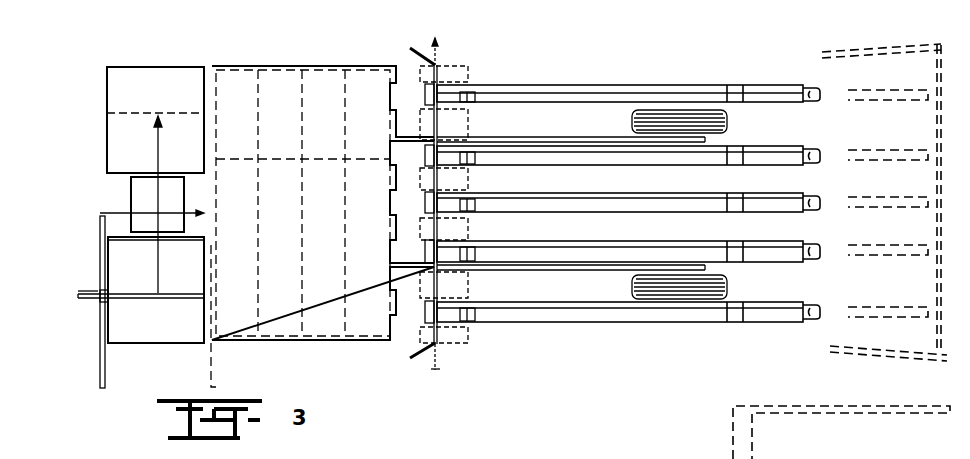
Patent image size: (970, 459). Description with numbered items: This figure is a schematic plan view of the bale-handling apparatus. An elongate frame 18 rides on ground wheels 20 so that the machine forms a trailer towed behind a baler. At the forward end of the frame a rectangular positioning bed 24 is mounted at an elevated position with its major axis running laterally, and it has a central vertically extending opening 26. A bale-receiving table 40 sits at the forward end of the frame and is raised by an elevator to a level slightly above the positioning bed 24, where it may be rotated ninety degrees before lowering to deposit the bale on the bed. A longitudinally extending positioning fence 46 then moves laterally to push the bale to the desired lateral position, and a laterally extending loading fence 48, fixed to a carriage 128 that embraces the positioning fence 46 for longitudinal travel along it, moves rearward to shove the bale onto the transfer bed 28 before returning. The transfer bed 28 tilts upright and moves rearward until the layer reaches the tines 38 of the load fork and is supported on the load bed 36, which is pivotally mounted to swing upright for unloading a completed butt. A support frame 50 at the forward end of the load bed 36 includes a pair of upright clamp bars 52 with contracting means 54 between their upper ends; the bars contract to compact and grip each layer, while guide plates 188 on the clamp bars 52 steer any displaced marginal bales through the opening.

The elongate frame 18 is at (526, 140).
The ground wheels 20 is at (632, 122).
The positioning bed 24 is at (150, 344).
The central vertically extending opening 26 is at (114, 175).
The transfer bed 28 is at (290, 204).
The load bed 36 is at (597, 86).
The tines 38 is at (475, 95).
The bale-receiving table 40 is at (131, 205).
The positioning fence 46 is at (187, 295).
The loading fence 48 is at (100, 372).
The support frame 50 is at (490, 453).
The upright clamp bars 52 is at (437, 64).
The contracting means 54 is at (440, 80).
The carriage 128 is at (93, 298).
The guide plates 188 is at (414, 48).